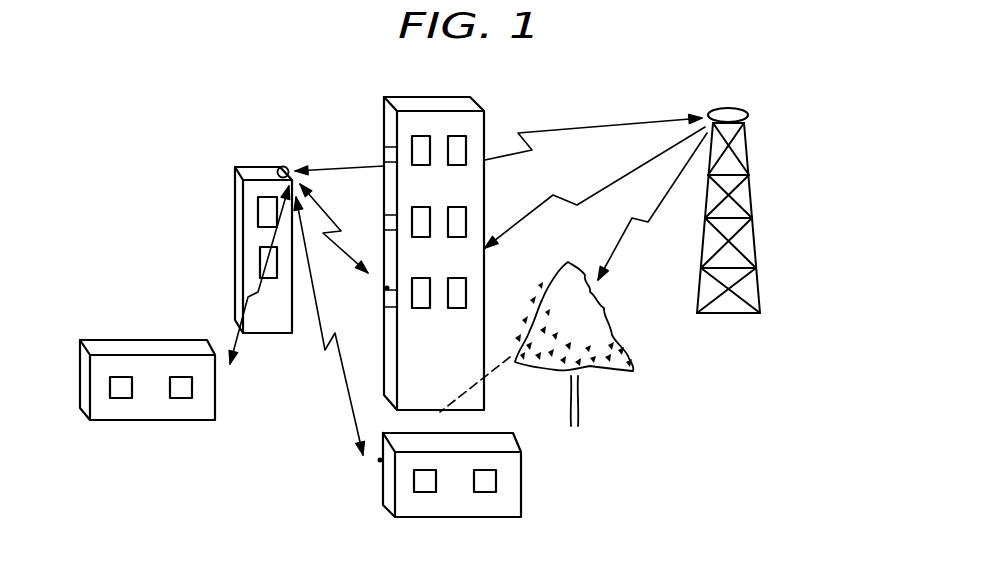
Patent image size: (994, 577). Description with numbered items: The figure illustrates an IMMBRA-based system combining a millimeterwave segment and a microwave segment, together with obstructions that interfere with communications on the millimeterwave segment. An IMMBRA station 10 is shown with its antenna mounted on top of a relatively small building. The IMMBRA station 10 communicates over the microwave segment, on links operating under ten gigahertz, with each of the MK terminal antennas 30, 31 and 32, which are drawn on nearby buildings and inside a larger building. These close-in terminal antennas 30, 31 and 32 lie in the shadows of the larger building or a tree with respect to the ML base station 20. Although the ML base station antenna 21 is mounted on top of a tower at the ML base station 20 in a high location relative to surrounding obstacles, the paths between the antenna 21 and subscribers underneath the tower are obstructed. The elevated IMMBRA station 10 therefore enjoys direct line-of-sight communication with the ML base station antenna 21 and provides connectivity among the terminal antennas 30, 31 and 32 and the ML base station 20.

The IMMBRA station 10 is at (290, 167).
The ML base station 20 is at (758, 297).
The ML base station antenna 21 is at (748, 118).
The MK terminal antenna 30 is at (214, 380).
The MK terminal antenna 31 is at (378, 460).
The MK terminal antenna 32 is at (386, 287).